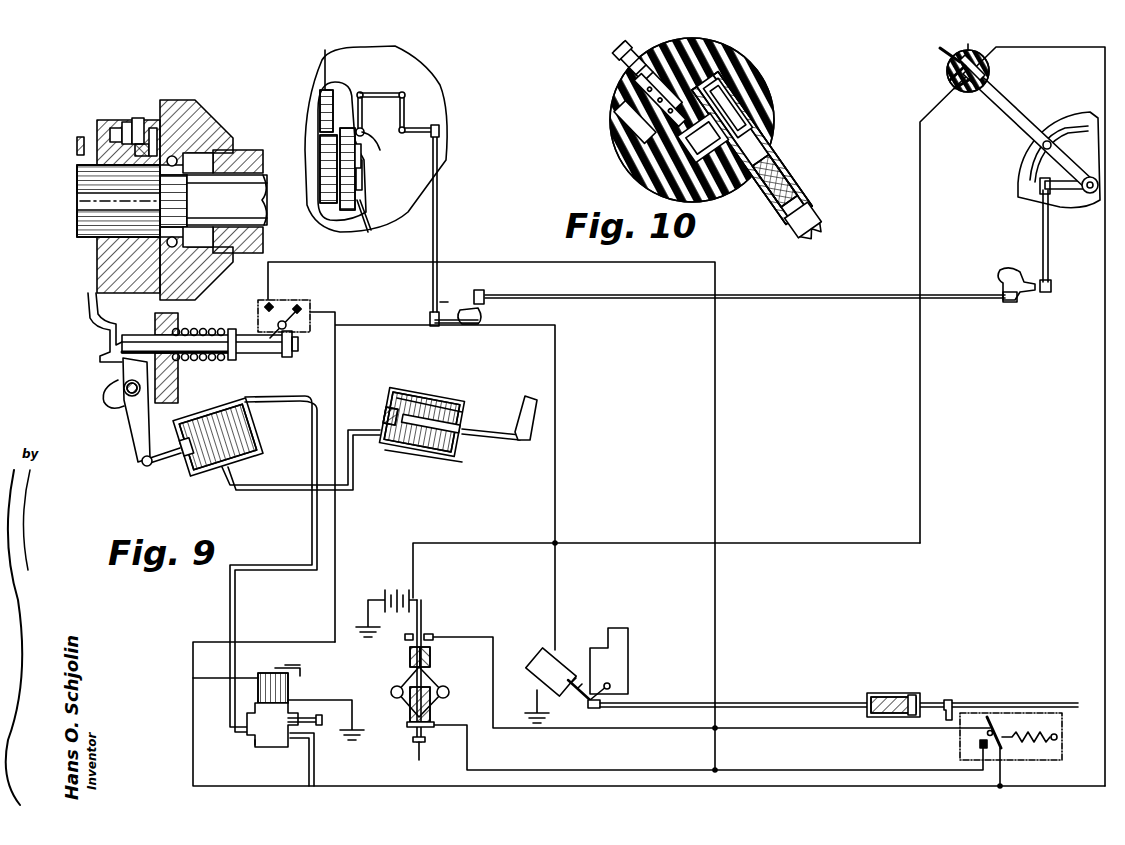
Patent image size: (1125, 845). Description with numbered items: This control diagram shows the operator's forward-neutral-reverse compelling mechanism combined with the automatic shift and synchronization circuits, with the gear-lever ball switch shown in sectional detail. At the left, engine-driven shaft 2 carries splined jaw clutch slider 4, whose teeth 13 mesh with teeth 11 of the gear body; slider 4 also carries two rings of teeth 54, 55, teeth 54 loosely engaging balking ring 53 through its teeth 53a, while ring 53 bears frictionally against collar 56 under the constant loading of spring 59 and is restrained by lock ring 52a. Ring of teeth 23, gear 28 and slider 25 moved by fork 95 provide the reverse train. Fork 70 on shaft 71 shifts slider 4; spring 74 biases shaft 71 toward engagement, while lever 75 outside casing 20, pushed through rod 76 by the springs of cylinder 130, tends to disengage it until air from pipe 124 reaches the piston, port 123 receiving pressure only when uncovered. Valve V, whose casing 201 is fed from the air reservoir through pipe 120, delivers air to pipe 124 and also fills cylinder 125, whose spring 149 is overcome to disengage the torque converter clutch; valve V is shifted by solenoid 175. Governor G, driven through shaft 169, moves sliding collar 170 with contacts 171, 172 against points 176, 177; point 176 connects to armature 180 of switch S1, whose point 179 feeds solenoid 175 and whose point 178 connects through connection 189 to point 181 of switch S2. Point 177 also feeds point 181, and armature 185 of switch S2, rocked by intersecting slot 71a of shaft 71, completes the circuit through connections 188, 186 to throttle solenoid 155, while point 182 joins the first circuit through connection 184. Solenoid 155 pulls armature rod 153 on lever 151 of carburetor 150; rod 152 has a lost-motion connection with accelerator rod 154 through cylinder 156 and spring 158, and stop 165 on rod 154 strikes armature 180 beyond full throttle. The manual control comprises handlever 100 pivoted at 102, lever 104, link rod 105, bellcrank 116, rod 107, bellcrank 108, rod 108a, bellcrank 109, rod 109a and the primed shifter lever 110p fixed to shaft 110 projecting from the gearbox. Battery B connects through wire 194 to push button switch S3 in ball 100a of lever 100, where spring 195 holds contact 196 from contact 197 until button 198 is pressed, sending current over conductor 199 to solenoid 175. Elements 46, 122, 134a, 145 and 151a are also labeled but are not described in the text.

In FIG. 9, the shaft 2 is at (255, 185).
In FIG. 9, the slider 4 is at (78, 143).
In FIG. 9, the teeth 11 is at (125, 122).
In FIG. 9, the teeth 13 is at (100, 122).
In FIG. 9, the casing 20 is at (400, 139).
In FIG. 9, the ring of teeth 23 is at (325, 205).
In FIG. 9, the slider 25 is at (366, 202).
In FIG. 9, the gear 28 is at (325, 88).
In FIG. 9, the lever 46 is at (528, 398).
In FIG. 9, the lock ring 52a is at (138, 118).
In FIG. 9, the balking ring 53 is at (142, 144).
In FIG. 9, the teeth 53a is at (190, 135).
In FIG. 9, the teeth 54 is at (110, 180).
In FIG. 9, the teeth 55 is at (100, 166).
In FIG. 9, the collar 56 is at (154, 130).
In FIG. 9, the spring 59 is at (114, 128).
In FIG. 9, the yoke 70 is at (92, 326).
In FIG. 9, the shaft 71 is at (262, 356).
In FIG. 9, the intersecting slot 71a is at (286, 357).
In FIG. 9, the spring 74 is at (192, 356).
In FIG. 9, the lever 75 is at (135, 430).
In FIG. 9, the rod 76 is at (153, 465).
In FIG. 9, the fork 95 is at (370, 230).
In FIG. 9, the shifter lever 100 is at (1020, 126).
In FIG. 10, the shifter lever 100 is at (770, 190).
In FIG. 9, the gear lever ball 100a is at (967, 92).
In FIG. 10, the gear lever ball 100a is at (765, 118).
In FIG. 9, the pivot 102 is at (1092, 196).
In FIG. 9, the lever 104 is at (1068, 192).
In FIG. 9, the link rod 105 is at (1043, 240).
In FIG. 9, the rod 107 is at (745, 283).
In FIG. 9, the bellcrank 108 is at (458, 310).
In FIG. 9, the rod 108a is at (440, 240).
In FIG. 9, the bellcrank 109 is at (412, 118).
In FIG. 9, the rod 109a is at (390, 93).
In FIG. 9, the shaft 110 is at (390, 150).
In FIG. 9, the shifter lever 110p is at (358, 110).
In FIG. 9, the bellcrank 116 is at (1020, 300).
In FIG. 9, the pipe 120 is at (314, 768).
In FIG. 9, the pipe 122 is at (266, 486).
In FIG. 9, the port 123 is at (224, 475).
In FIG. 9, the pipe 124 is at (262, 570).
In FIG. 9, the cylinder 125 is at (458, 454).
In FIG. 9, the cylinder 130 is at (196, 476).
In FIG. 9, the outlet 134a is at (318, 715).
In FIG. 9, the rod 145 is at (488, 430).
In FIG. 9, the spring 149 is at (440, 396).
In FIG. 9, the engine carburetor 150 is at (628, 638).
In FIG. 9, the lever 151 is at (612, 688).
In FIG. 9, the spring 151a is at (578, 675).
In FIG. 9, the rod 152 is at (408, 392).
In FIG. 9, the solenoid armature rod 153 is at (588, 704).
In FIG. 9, the accelerator rod 154 is at (1040, 703).
In FIG. 9, the throttle control solenoid 155 is at (538, 656).
In FIG. 9, the cylinder 156 is at (895, 693).
In FIG. 9, the spring 158 is at (872, 693).
In FIG. 9, the stop 165 is at (949, 700).
In FIG. 9, the shaft 169 is at (419, 745).
In FIG. 9, the sliding collar 170 is at (432, 655).
In FIG. 9, the contact 171 is at (408, 655).
In FIG. 9, the contact 172 is at (408, 708).
In FIG. 9, the solenoid 175 is at (265, 678).
In FIG. 9, the upper governor contact 176 is at (430, 634).
In FIG. 9, the contact point 177 is at (408, 727).
In FIG. 9, the point 178 is at (978, 743).
In FIG. 9, the switch point 179 is at (1004, 752).
In FIG. 9, the armature 180 is at (988, 717).
In FIG. 9, the point 181 is at (264, 306).
In FIG. 9, the point 182 is at (300, 310).
In FIG. 9, the connection 184 is at (866, 786).
In FIG. 9, the armature 185 is at (294, 302).
In FIG. 9, the connection 186 is at (557, 414).
In FIG. 9, the connection 188 is at (718, 370).
In FIG. 9, the connection 189 is at (778, 770).
In FIG. 9, the wire 194 is at (800, 543).
In FIG. 10, the wire 194 is at (800, 205).
In FIG. 9, the spring 195 is at (952, 86).
In FIG. 10, the spring 195 is at (635, 90).
In FIG. 9, the contact 196 is at (948, 70).
In FIG. 10, the contact 196 is at (625, 140).
In FIG. 9, the contact 197 is at (982, 68).
In FIG. 10, the contact 197 is at (712, 108).
In FIG. 9, the button 198 is at (945, 52).
In FIG. 10, the button 198 is at (625, 65).
In FIG. 9, the conductor 199 is at (1103, 410).
In FIG. 9, the casing 201 is at (276, 740).
In FIG. 9, the battery B is at (397, 590).
In FIG. 9, the governor G is at (440, 708).
In FIG. 9, the valve V is at (255, 758).
In FIG. 9, the switch S1 is at (1058, 738).
In FIG. 9, the switch S2 is at (262, 298).
In FIG. 9, the push button switch S3 is at (970, 50).
In FIG. 10, the push button switch S3 is at (608, 128).